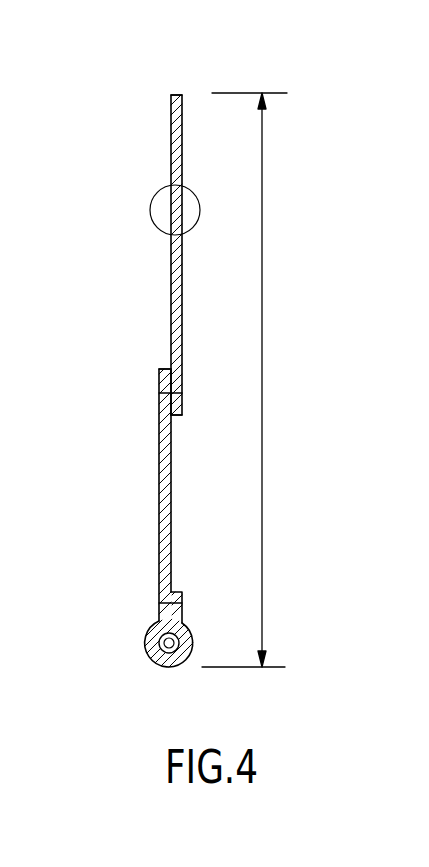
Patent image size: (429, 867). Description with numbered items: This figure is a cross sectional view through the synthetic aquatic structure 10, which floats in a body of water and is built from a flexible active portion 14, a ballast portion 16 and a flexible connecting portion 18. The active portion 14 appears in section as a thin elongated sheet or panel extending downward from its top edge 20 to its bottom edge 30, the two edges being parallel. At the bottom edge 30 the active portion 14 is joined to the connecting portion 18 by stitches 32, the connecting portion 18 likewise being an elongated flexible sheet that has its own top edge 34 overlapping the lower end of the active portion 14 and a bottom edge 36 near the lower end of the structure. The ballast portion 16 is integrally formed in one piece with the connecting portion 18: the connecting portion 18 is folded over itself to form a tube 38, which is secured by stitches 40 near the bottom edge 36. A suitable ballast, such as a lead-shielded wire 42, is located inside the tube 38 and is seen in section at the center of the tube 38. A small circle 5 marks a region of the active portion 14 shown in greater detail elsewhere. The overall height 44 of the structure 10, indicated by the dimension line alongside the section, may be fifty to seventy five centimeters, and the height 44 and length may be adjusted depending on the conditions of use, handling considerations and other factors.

The synthetic aquatic structure 10 is at (315, 132).
The flexible active portion 14 is at (182, 146).
The ballast portion 16 is at (137, 677).
The flexible connecting portion 18 is at (171, 503).
The top edge 20 is at (172, 95).
The detail region of FIG. 5 is at (200, 207).
The bottom edge 30 is at (173, 416).
The stitches 32 is at (164, 395).
The top edge 34 is at (166, 369).
The bottom edge 36 is at (183, 594).
The tube 38 is at (169, 667).
The stitches 40 is at (163, 601).
The lead-shielded wire 42 is at (184, 642).
The height 44 is at (262, 380).